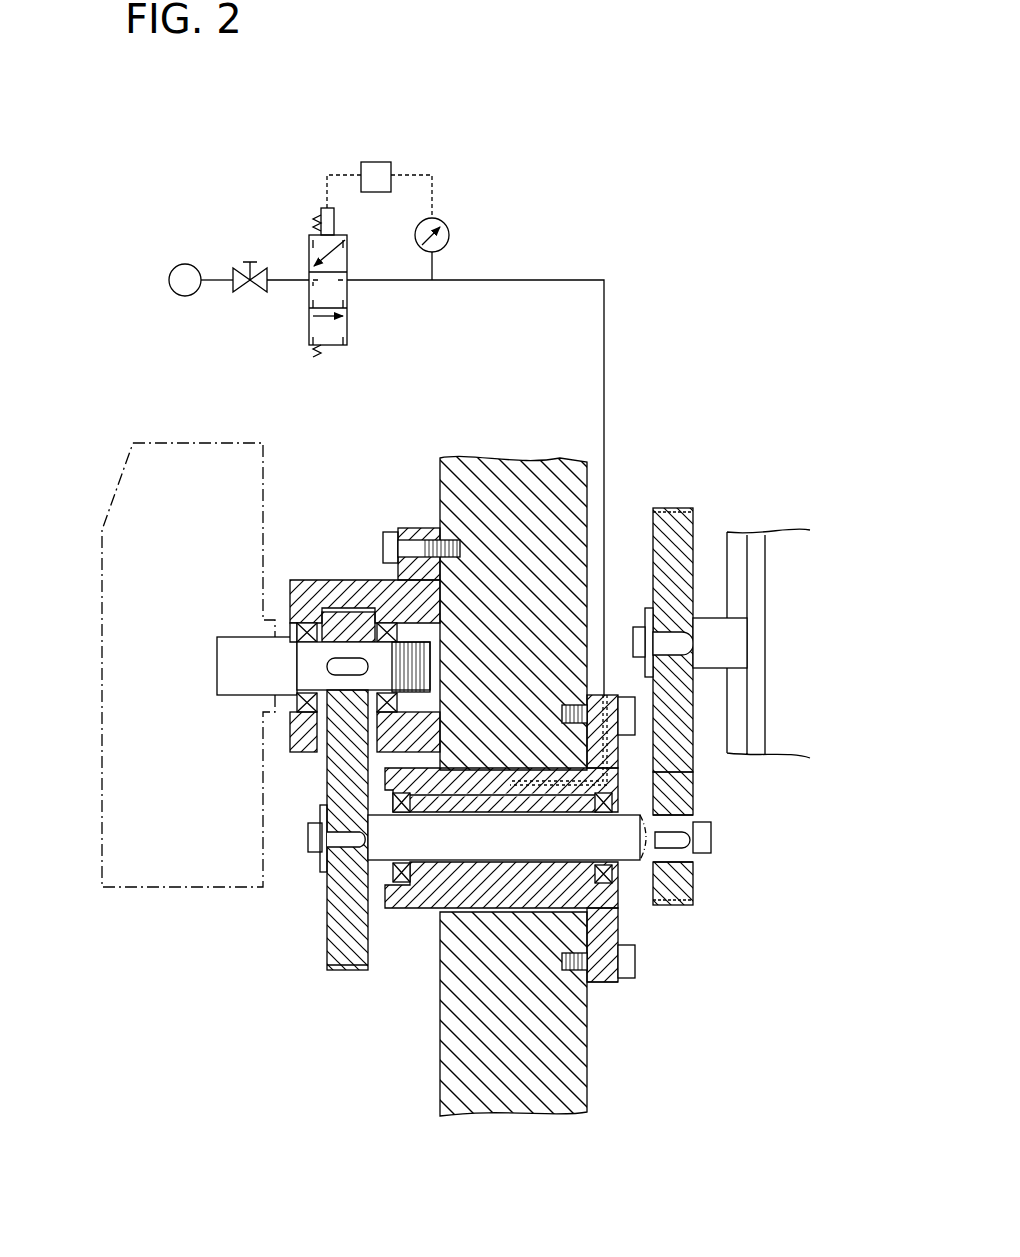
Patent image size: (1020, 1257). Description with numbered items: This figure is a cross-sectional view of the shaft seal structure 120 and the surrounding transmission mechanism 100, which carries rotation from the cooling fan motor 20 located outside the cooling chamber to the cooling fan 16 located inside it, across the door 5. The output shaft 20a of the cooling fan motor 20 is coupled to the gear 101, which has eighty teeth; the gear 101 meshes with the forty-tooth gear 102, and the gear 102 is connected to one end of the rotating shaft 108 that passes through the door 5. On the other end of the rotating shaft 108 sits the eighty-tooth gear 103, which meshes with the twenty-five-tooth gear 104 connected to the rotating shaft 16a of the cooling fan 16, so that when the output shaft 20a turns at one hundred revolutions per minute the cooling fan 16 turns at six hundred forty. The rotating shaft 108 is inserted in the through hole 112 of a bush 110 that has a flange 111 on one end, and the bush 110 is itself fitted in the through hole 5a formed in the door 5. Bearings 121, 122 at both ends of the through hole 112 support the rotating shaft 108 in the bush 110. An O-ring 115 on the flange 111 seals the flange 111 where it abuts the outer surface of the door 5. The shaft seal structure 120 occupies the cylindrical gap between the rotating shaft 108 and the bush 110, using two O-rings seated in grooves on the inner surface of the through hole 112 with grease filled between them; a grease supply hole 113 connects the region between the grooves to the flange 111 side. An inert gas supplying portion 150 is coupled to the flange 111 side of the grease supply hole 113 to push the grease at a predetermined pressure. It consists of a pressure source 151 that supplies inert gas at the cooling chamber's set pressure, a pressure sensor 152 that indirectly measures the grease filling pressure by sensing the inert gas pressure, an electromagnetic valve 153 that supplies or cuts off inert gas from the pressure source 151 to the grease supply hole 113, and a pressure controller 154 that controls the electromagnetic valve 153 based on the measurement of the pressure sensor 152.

The door 5 is at (470, 486).
The through hole 5a is at (452, 900).
The cooling fan 16 is at (135, 493).
The rotating shaft 16a is at (240, 652).
The cooling fan motor 20 is at (790, 530).
The output shaft 20a is at (706, 617).
The transmission mechanism 100 is at (280, 957).
The gear 101 is at (668, 508).
The gear 102 is at (690, 790).
The gear 103 is at (345, 940).
The gear 104 is at (355, 615).
The rotating shaft 108 is at (642, 858).
The bush 110 is at (620, 940).
The flange 111 is at (605, 982).
The through hole 112 is at (420, 908).
The grease supply hole 113 is at (540, 760).
The O-ring 115 is at (620, 922).
The shaft seal structure 120 is at (390, 925).
The bearing 121 is at (393, 872).
The bearing 122 is at (614, 801).
The inert gas supplying portion 150 is at (583, 270).
The pressure source 151 is at (184, 264).
The pressure sensor 152 is at (447, 222).
The electromagnetic valve 153 is at (309, 245).
The pressure controller 154 is at (392, 165).